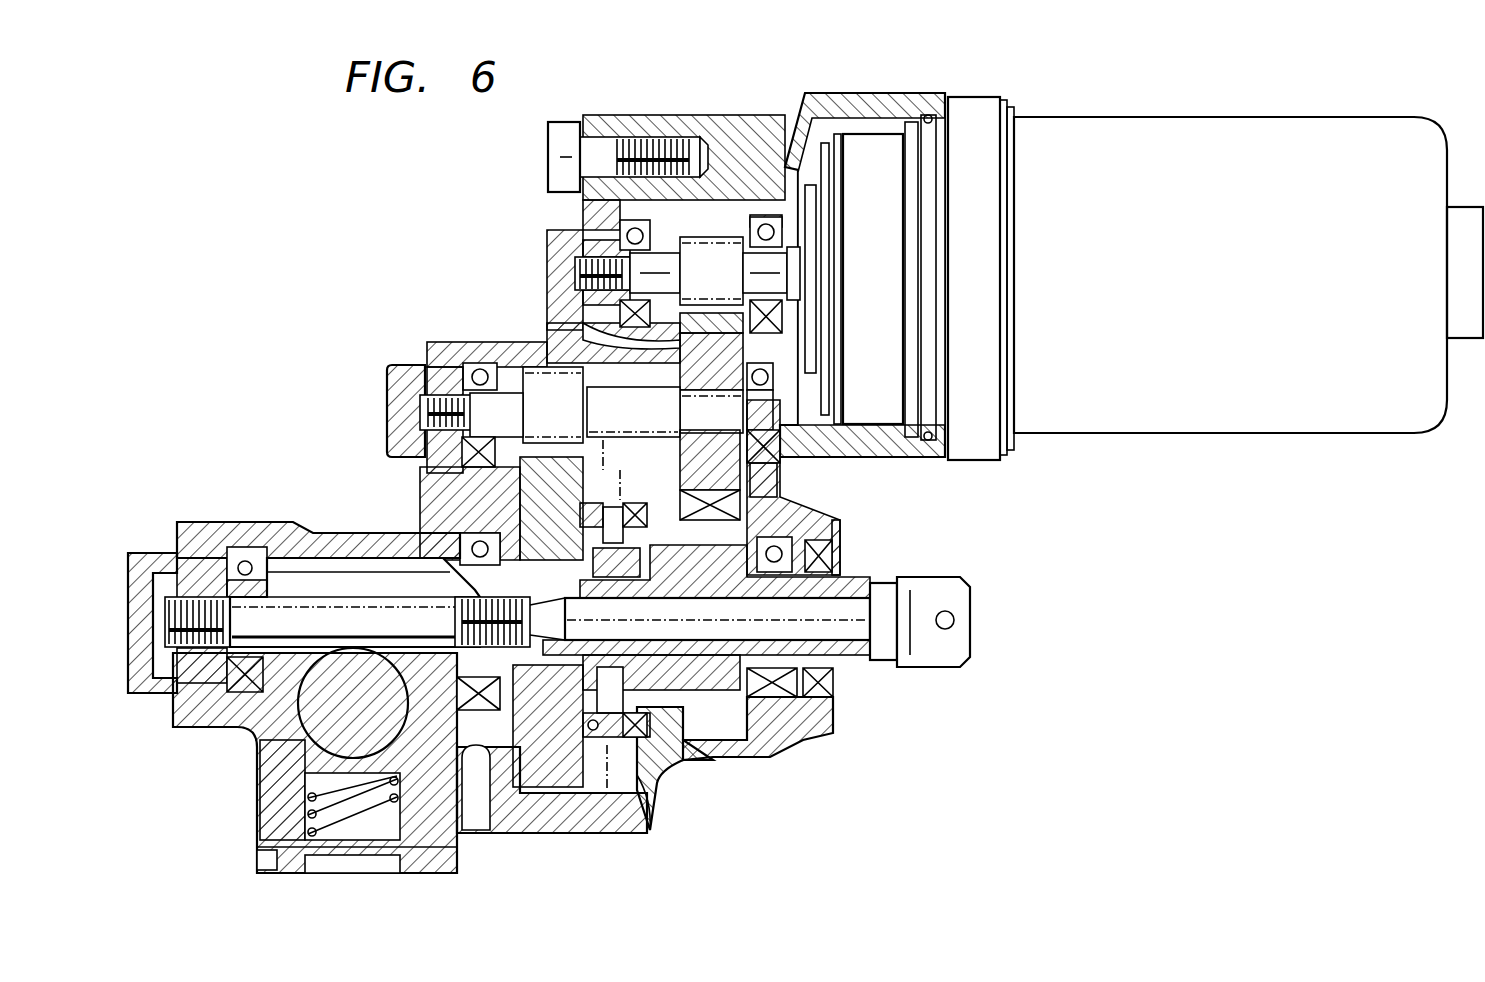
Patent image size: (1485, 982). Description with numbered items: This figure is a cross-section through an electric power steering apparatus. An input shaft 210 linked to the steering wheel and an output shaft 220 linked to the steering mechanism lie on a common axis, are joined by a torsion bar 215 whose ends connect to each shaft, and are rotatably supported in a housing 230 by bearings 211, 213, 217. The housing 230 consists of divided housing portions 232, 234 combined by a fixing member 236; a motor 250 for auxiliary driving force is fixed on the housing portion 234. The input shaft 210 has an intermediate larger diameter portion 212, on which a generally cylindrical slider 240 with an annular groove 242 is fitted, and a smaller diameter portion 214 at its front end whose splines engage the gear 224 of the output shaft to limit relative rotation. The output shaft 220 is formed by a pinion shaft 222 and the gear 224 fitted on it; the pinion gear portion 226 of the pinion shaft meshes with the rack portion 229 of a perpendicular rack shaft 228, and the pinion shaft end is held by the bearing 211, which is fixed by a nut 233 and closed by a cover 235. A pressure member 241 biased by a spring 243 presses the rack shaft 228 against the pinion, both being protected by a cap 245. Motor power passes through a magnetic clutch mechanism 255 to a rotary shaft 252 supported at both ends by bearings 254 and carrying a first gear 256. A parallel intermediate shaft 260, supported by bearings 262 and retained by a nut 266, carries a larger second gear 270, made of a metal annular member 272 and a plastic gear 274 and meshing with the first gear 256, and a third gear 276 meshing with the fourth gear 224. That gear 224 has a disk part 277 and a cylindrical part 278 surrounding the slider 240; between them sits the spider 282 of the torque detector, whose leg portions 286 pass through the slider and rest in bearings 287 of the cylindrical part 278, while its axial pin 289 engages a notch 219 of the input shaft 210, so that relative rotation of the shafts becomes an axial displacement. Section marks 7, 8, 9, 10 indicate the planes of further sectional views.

The section line FIG. 7 is at (616, 490).
The section line FIG. 8 is at (689, 527).
The section line FIG. 9 is at (603, 462).
The section line FIG. 10 is at (558, 563).
The input shaft 210 is at (847, 567).
The bearing 211 is at (245, 550).
The larger diameter portion 212 is at (800, 523).
The bearing 213 is at (443, 540).
The smaller diameter portion 214 is at (551, 508).
The torsion bar 215 is at (867, 640).
The bearing 217 is at (833, 513).
The notch 219 is at (636, 512).
The output shaft 220 is at (437, 568).
The pinion shaft 222 is at (400, 634).
The gear 224 is at (543, 793).
The pinion gear portion 226 is at (260, 733).
The rack shaft 228 is at (378, 726).
The rack portion 229 is at (327, 652).
The housing 230 is at (627, 113).
The housing portion 232 is at (521, 343).
The nut 233 is at (163, 560).
The housing portion 234 is at (753, 123).
The cover 235 is at (128, 594).
The fixing member 236 is at (556, 150).
The slider 240 is at (668, 755).
The pressure member 241 is at (303, 753).
The annular groove 242 is at (807, 728).
The spring 243 is at (407, 787).
The cap 245 is at (415, 870).
The motor 250 is at (1240, 282).
The rotary shaft 252 is at (733, 290).
The bearings 254 is at (597, 222).
The clutch mechanism 255 is at (857, 130).
The first gear 256 is at (722, 236).
The intermediate shaft 260 is at (655, 426).
The bearings 262 is at (473, 360).
The nut 266 is at (420, 385).
The second gear 270 is at (673, 371).
The metal annular member 272 is at (728, 420).
The plastic gear 274 is at (777, 493).
The third gear 276 is at (572, 416).
The disk part 277 is at (575, 753).
The cylindrical part 278 is at (636, 491).
The spider 282 is at (706, 665).
The leg portions 286 is at (387, 395).
The bearings 287 is at (660, 790).
The pin 289 is at (725, 571).